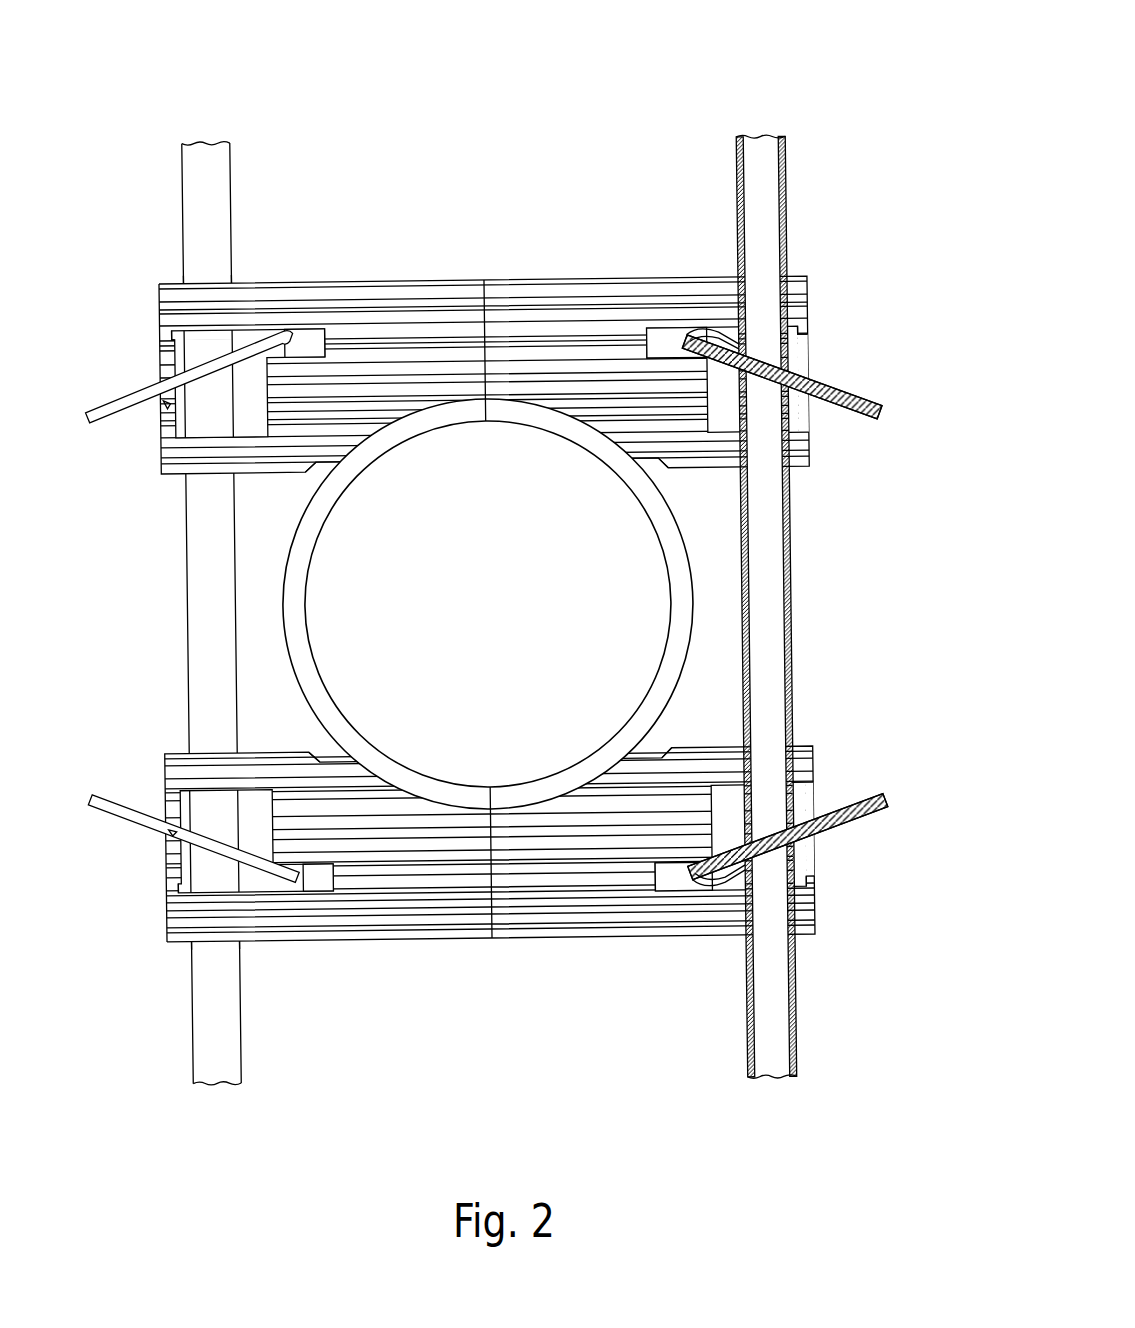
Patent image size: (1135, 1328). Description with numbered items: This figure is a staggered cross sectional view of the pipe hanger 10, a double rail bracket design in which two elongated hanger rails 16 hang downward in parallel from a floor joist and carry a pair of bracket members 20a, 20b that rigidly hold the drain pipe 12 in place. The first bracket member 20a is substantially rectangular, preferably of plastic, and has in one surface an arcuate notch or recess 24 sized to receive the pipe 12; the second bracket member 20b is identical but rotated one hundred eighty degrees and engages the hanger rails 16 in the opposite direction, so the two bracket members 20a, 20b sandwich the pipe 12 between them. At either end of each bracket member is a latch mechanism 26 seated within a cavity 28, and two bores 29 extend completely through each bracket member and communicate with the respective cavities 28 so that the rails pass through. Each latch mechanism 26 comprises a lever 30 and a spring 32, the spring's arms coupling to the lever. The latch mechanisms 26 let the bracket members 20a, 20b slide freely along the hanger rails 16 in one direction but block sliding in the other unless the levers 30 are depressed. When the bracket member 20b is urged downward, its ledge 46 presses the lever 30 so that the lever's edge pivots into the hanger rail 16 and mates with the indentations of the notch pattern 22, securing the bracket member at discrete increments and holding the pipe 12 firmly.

The pipe hanger 10 is at (493, 544).
The drain pipe 12 is at (310, 602).
The hanger rail 16 is at (210, 163).
The first bracket member 20a is at (472, 281).
The second bracket member 20b is at (487, 940).
The notch pattern 22 is at (182, 180).
The arcuate notch or recess 24 is at (320, 757).
The latch mechanism 26 is at (133, 380).
The cavity 28 is at (177, 357).
The bore 29 is at (235, 283).
The lever 30 is at (95, 430).
The spring 32 is at (172, 402).
The ledge 46 is at (285, 356).